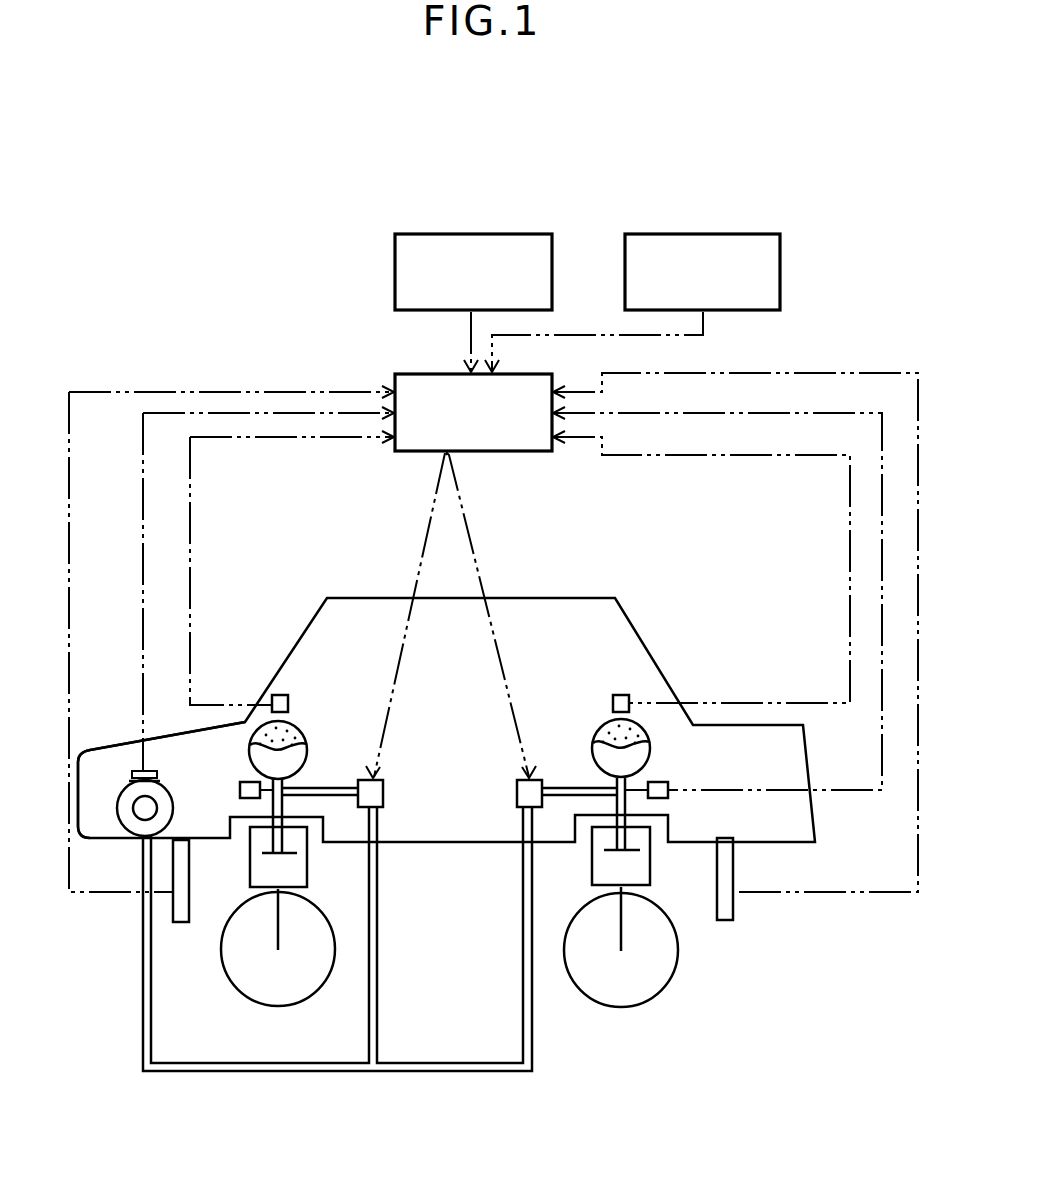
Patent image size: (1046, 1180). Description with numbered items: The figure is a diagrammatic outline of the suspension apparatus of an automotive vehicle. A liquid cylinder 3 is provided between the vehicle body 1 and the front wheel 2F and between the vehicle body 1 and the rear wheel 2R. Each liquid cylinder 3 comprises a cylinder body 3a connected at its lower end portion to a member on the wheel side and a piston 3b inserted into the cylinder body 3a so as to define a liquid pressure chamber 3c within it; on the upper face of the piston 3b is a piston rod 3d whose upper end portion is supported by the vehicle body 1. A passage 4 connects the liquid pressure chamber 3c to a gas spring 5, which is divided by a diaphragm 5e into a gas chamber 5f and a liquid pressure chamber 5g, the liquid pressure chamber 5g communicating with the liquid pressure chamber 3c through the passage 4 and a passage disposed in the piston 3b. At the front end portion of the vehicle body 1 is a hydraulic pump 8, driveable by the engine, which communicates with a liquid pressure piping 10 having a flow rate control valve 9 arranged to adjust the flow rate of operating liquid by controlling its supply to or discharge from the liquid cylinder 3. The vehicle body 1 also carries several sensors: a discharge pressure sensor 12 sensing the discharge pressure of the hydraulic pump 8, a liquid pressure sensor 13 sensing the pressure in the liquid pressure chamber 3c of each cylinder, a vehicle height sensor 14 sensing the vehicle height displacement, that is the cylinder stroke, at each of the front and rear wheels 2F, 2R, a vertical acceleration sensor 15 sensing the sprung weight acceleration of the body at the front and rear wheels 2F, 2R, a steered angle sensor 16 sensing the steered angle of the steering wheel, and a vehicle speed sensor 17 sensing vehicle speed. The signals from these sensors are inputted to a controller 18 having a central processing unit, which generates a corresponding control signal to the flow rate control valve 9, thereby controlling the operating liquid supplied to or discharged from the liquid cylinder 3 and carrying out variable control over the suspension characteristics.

The vehicle body 1 is at (576, 592).
The front wheel 2F is at (313, 1000).
The rear wheel 2R is at (661, 997).
The liquid cylinder 3 is at (455, 855).
The cylinder body 3a is at (308, 852).
The piston 3b is at (262, 855).
The liquid pressure chamber 3c is at (295, 883).
The piston rod 3d is at (250, 818).
The passage 4 is at (284, 788).
The gas spring 5 is at (407, 719).
The diaphragm 5e is at (252, 756).
The gas chamber 5f is at (295, 726).
The liquid pressure chamber 5g is at (256, 767).
The hydraulic pump 8 is at (116, 842).
The flow rate control valve 9 is at (383, 782).
The liquid pressure piping 10 is at (292, 1073).
The discharge pressure sensor 12 is at (118, 735).
The liquid pressure sensor 13 is at (240, 790).
The vehicle height sensor 14 is at (181, 923).
The vertical acceleration sensor 15 is at (290, 696).
The steered angle sensor 16 is at (473, 272).
The vehicle speed sensor 17 is at (702, 272).
The controller 18 is at (534, 545).